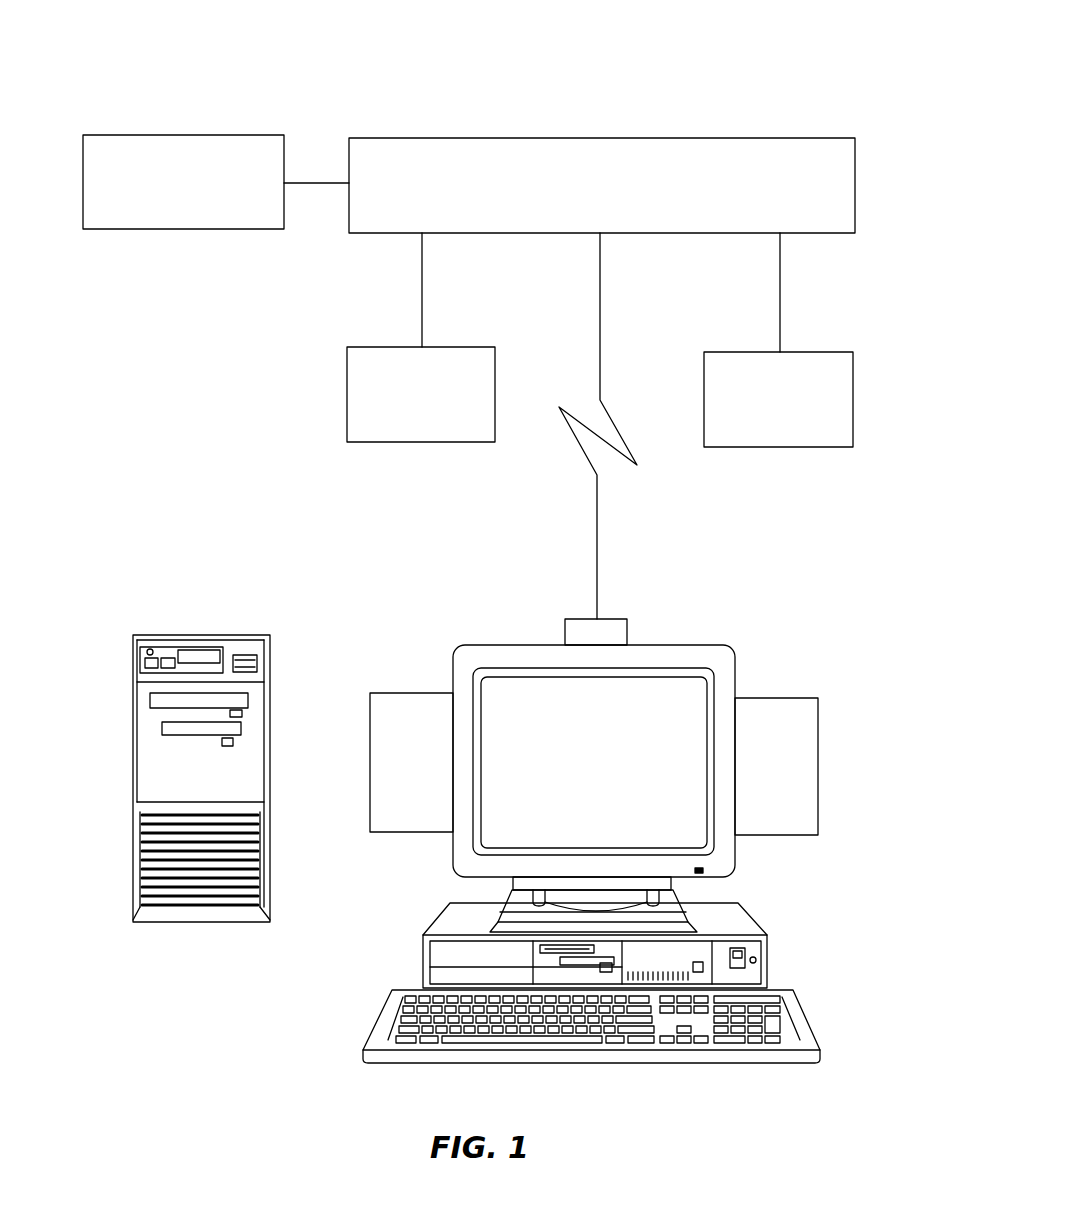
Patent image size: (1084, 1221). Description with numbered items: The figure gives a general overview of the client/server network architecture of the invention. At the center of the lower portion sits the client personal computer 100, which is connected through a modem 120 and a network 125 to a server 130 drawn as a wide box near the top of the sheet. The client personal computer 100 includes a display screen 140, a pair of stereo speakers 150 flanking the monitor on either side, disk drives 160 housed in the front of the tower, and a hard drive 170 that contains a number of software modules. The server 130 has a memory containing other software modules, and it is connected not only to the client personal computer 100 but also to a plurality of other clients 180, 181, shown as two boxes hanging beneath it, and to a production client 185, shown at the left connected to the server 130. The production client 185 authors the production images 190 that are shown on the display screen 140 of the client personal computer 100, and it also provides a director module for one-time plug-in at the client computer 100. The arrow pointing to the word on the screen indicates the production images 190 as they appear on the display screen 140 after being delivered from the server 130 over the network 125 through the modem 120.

The client personal computer 100 is at (733, 68).
The modem 120 is at (632, 608).
The network 125 is at (630, 426).
The server 130 is at (602, 162).
The display screen 140 is at (662, 771).
The stereo speakers 150 is at (600, 764).
The disk drives 160 is at (242, 726).
The hard drive 170 is at (204, 778).
The client 180 is at (384, 393).
The client 181 is at (822, 398).
The production client 185 is at (183, 159).
The production images 190 is at (627, 753).